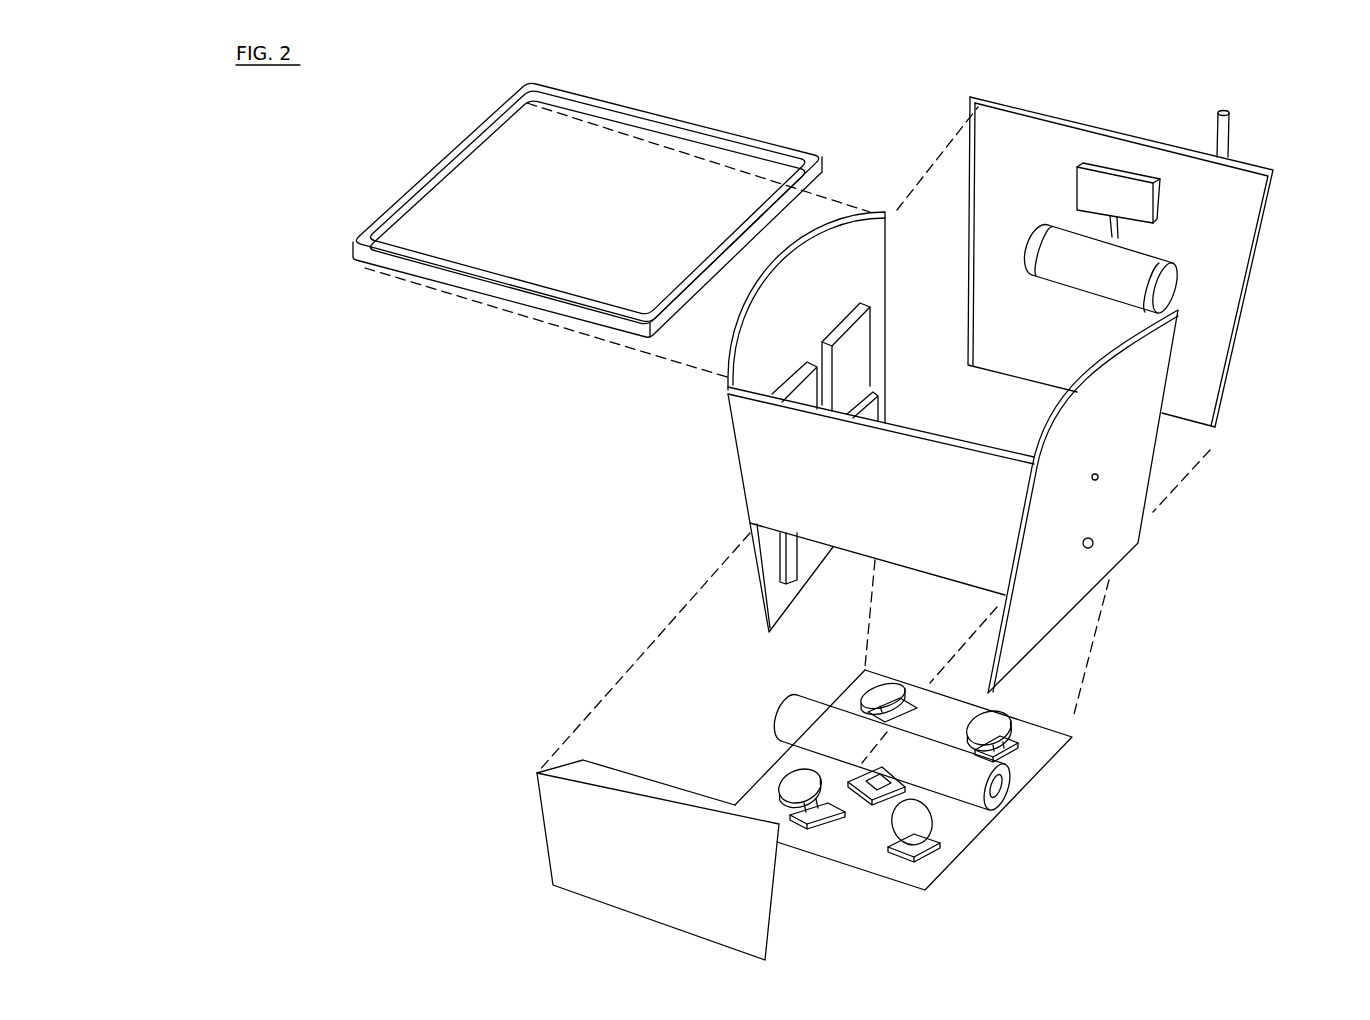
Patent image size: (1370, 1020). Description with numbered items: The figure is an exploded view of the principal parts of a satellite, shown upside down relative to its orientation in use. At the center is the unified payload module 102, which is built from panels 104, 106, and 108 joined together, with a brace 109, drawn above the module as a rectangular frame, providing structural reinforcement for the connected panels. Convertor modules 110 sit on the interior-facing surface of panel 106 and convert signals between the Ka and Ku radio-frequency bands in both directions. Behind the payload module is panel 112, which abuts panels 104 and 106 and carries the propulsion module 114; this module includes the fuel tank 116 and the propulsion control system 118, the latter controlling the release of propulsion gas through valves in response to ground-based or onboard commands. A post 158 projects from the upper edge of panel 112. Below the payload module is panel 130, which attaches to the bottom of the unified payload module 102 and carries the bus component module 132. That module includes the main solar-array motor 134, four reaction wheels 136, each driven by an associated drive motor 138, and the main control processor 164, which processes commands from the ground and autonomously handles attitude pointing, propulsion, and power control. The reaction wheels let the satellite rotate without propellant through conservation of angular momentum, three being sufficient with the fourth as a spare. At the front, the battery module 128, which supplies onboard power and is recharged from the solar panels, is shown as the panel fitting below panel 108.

The unified payload module 102 is at (1032, 395).
The panel 104 is at (1149, 422).
The panel 106 is at (829, 309).
The panel 108 is at (903, 500).
The brace 109 is at (483, 340).
The convertor modules 110 is at (857, 358).
The panel 112 is at (1045, 182).
The propulsion module 114 is at (1180, 239).
The fuel tank 116 is at (1117, 274).
The propulsion control system 118 is at (1134, 207).
The battery module 128 is at (613, 787).
The panel 130 is at (1032, 757).
The bus component module 132 is at (1058, 782).
The main solar-array motor 134 is at (970, 790).
The reaction wheels 136 is at (922, 820).
The drive motor 138 is at (900, 853).
The post 158 is at (1240, 116).
The main control processor 164 is at (867, 795).